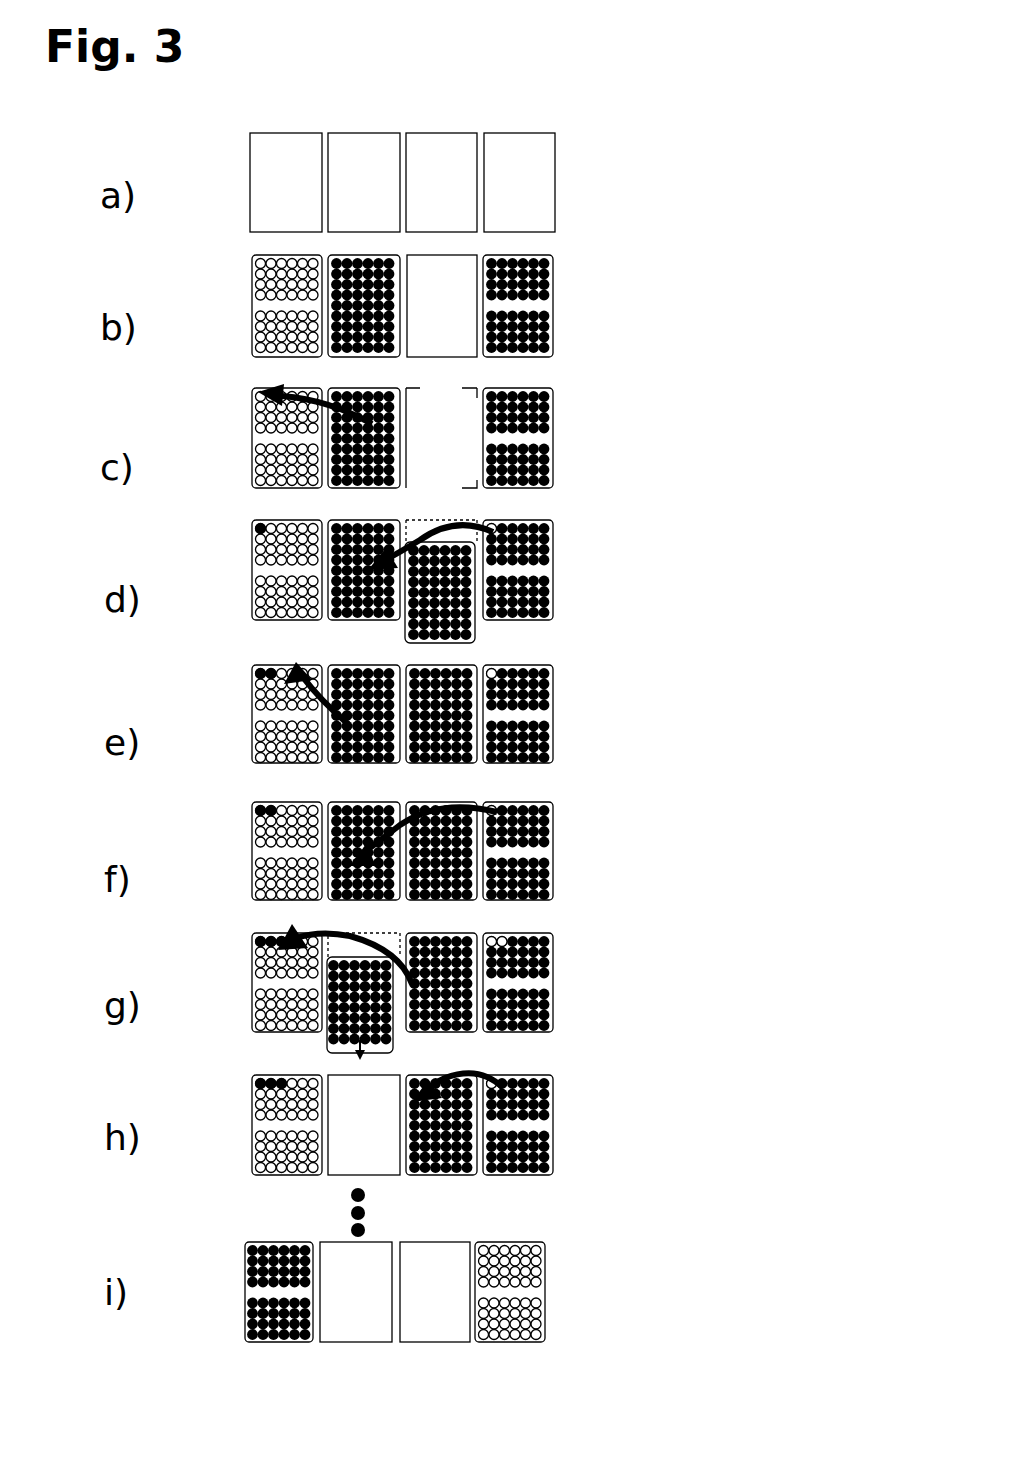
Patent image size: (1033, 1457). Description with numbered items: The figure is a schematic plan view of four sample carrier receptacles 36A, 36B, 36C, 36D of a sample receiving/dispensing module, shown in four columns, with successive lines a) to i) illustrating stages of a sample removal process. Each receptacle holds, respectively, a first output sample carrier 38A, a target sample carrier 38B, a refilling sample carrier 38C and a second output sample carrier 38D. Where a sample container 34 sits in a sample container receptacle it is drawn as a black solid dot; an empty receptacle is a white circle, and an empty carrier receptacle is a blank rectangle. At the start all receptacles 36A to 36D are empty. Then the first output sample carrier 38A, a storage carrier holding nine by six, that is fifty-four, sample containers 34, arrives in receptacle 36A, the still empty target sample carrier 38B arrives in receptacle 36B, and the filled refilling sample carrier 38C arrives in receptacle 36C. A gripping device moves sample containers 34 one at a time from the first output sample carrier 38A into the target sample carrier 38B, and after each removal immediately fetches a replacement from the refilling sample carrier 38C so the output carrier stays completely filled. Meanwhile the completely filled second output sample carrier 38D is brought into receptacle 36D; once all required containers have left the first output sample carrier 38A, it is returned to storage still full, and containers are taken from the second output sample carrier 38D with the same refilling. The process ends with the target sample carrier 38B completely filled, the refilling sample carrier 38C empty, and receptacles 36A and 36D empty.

The sample container 34 is at (545, 345).
The sample carrier receptacle 36A is at (362, 134).
The sample carrier receptacle 36B is at (276, 130).
The sample carrier receptacle 36C is at (534, 132).
The sample carrier receptacle 36D is at (438, 134).
The first output sample carrier 38A is at (340, 338).
The target sample carrier 38B is at (258, 285).
The refilling sample carrier 38C is at (557, 296).
The second output sample carrier 38D is at (476, 642).